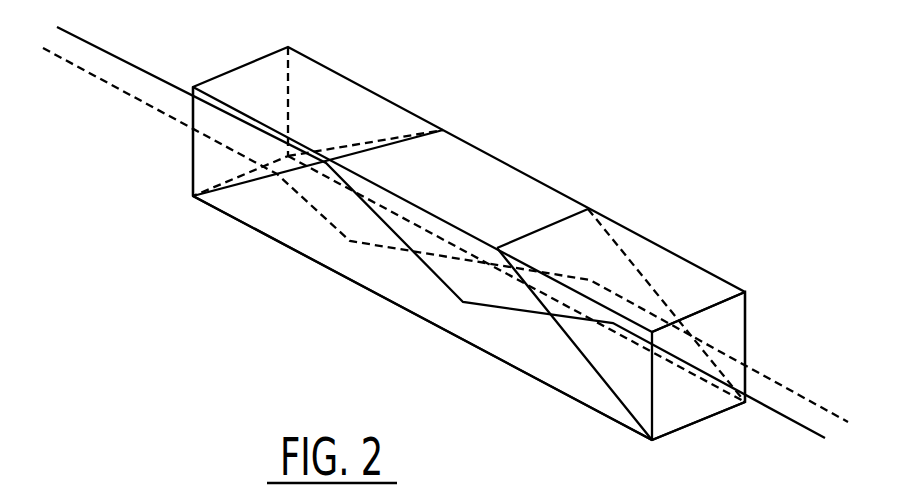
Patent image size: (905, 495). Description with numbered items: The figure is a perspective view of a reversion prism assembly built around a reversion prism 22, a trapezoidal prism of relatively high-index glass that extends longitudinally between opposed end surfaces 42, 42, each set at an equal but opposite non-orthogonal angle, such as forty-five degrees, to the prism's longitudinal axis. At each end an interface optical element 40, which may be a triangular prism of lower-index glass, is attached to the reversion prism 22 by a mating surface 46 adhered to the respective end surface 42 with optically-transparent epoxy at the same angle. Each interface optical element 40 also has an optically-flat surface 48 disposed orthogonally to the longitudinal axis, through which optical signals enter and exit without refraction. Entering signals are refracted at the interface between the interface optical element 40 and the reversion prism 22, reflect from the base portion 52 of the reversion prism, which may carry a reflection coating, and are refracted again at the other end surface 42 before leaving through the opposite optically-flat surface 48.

The interface optical element 40 is at (509, 229).
The end surface 42 is at (268, 183).
The mating surface 46 is at (417, 141).
The optically-flat surface 48 is at (247, 63).
The base portion 52 is at (500, 362).
The reversion prism 22 is at (400, 314).